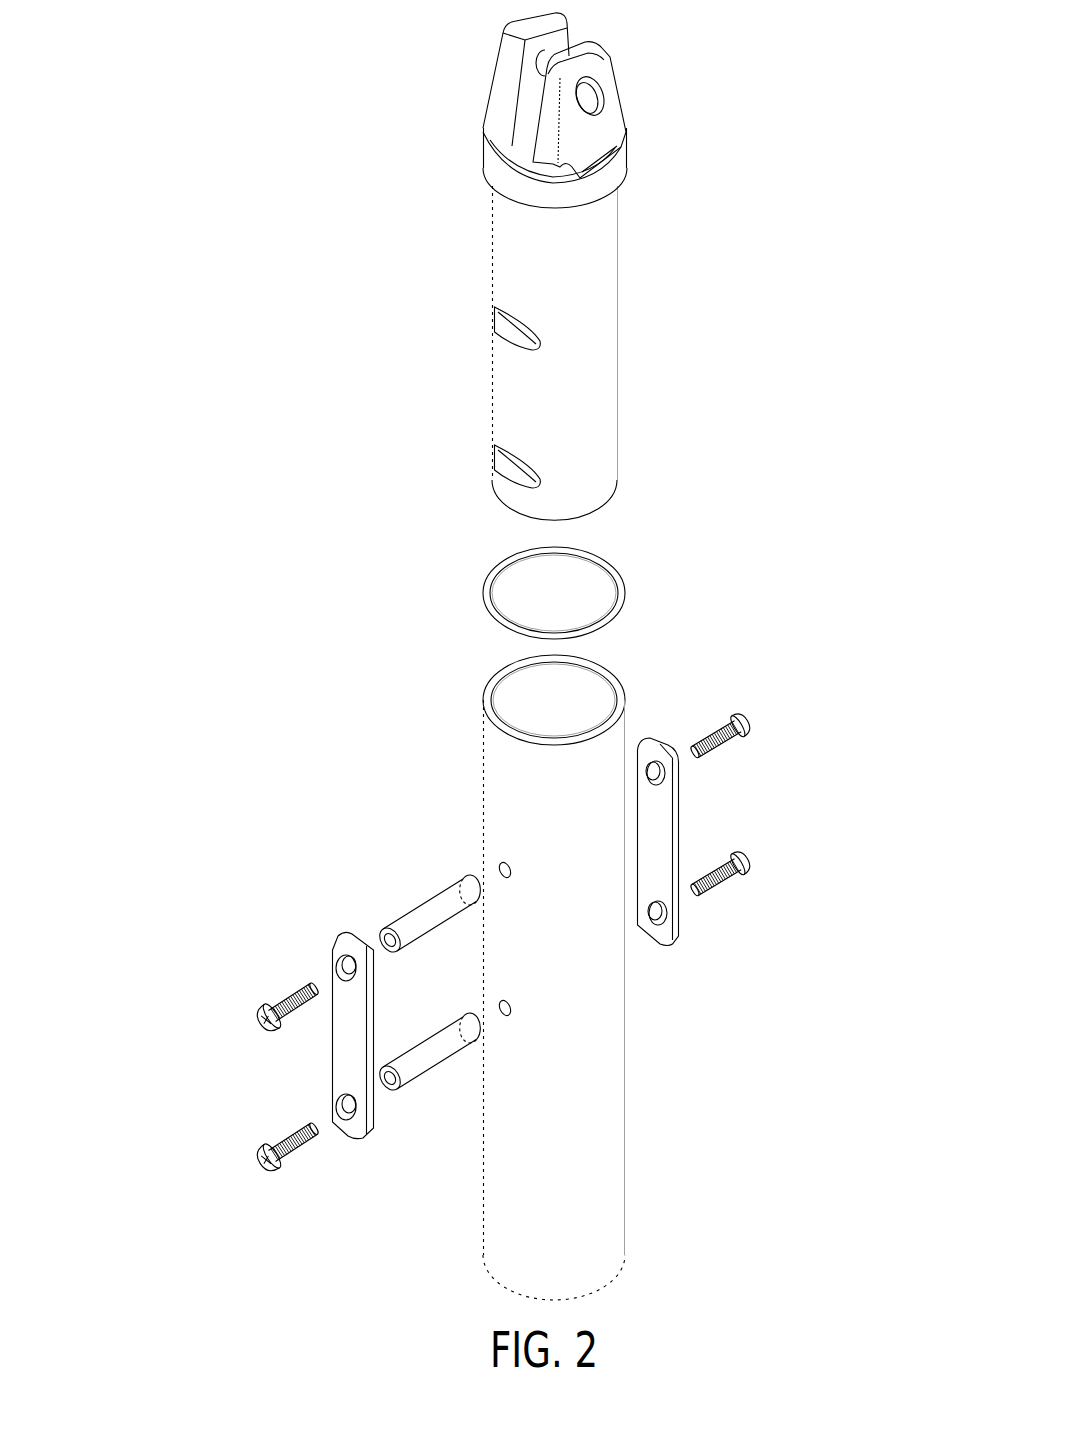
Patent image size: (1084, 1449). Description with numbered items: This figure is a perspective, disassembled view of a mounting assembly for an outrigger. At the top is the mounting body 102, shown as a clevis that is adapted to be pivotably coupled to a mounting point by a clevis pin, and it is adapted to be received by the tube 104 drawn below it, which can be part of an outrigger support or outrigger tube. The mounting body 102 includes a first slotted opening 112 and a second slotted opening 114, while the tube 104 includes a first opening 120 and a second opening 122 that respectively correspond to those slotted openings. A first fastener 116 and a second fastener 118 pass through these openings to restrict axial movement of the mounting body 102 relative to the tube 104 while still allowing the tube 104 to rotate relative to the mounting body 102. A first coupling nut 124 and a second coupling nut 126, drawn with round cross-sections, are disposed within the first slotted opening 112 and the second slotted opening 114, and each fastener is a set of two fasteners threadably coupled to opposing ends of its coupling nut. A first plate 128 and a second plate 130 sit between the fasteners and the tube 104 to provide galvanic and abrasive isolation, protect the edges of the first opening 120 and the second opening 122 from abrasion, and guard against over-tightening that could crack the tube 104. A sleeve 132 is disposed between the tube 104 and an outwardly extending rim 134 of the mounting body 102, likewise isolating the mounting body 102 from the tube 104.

The mounting body 102 is at (505, 72).
The tube 104 is at (612, 1162).
The first slotted opening 112 is at (502, 322).
The second slotted opening 114 is at (502, 458).
The first fastener 116 is at (745, 732).
The second fastener 118 is at (745, 870).
The first opening 120 is at (500, 866).
The second opening 122 is at (500, 1005).
The first coupling nut 124 is at (433, 920).
The second coupling nut 126 is at (450, 1055).
The first plate 128 is at (340, 945).
The second plate 130 is at (645, 753).
The sleeve 132 is at (625, 588).
The outwardly extending rim 134 is at (622, 178).